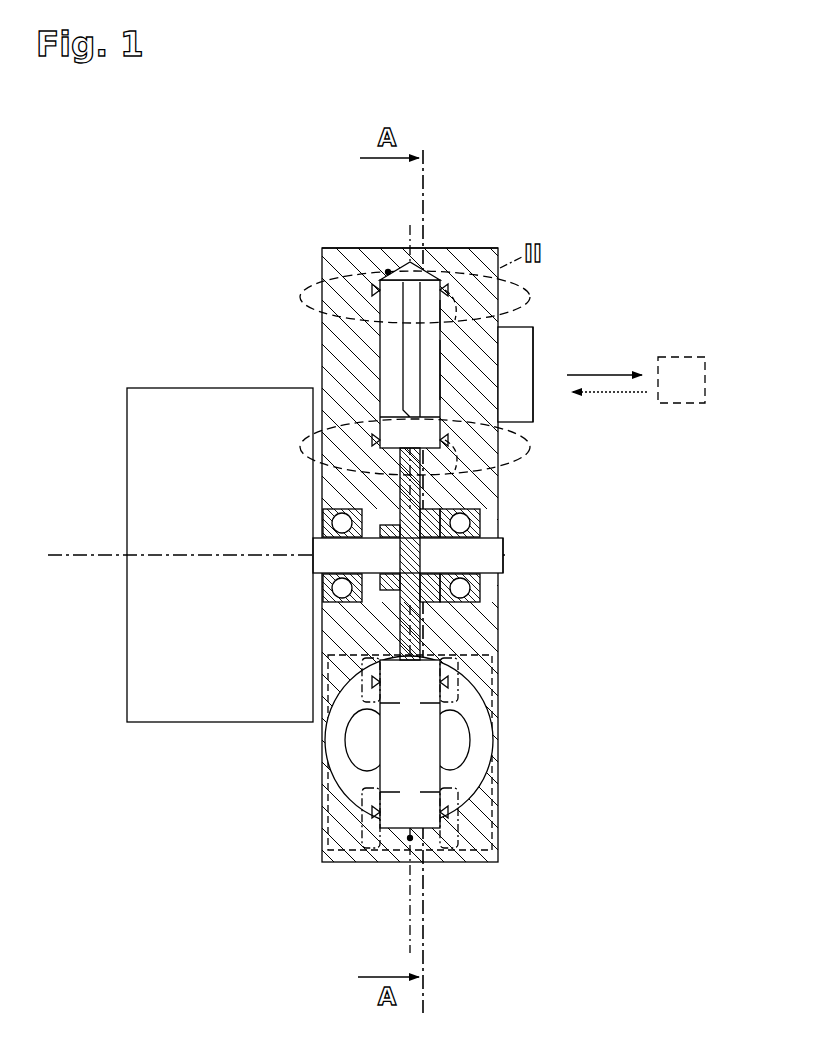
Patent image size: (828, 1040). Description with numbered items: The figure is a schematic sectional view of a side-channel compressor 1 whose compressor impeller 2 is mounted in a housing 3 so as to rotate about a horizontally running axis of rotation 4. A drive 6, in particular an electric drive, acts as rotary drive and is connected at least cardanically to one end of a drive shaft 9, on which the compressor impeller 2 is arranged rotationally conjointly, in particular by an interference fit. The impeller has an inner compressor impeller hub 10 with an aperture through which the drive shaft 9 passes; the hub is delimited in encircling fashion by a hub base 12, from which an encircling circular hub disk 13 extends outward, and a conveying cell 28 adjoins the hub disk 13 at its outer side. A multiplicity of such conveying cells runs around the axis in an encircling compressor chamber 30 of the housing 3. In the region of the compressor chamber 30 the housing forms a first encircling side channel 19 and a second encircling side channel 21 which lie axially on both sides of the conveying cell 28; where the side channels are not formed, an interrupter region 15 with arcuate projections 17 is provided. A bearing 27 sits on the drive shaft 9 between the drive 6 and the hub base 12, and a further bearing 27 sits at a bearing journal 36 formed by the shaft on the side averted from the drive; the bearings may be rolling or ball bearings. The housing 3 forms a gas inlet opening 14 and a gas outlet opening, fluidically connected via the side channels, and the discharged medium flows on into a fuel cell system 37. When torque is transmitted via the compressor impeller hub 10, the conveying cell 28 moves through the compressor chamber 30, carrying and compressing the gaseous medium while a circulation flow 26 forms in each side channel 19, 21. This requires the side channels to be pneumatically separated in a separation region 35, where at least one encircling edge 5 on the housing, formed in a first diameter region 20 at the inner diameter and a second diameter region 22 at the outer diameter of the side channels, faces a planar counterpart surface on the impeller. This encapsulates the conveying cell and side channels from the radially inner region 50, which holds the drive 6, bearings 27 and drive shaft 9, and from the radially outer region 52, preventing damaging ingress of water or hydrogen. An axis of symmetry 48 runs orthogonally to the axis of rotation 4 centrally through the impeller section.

The side-channel compressor 1 is at (207, 250).
The compressor impeller 2 is at (410, 258).
The housing 3 is at (470, 633).
The axis of rotation 4 is at (82, 553).
The encircling edge 5 is at (375, 296).
The drive 6 is at (140, 410).
The drive shaft 9 is at (480, 565).
The compressor impeller hub 10 is at (392, 590).
The hub base 12 is at (388, 577).
The hub disk 13 is at (425, 498).
The gas inlet opening 14 is at (513, 408).
The interrupter region 15 is at (441, 370).
The arcuate projections 17 is at (441, 347).
The first encircling side channel 19 is at (452, 742).
The first diameter region 20 is at (470, 457).
The second encircling side channel 21 is at (383, 778).
The second diameter region 22 is at (472, 305).
The circulation flow 26 is at (468, 757).
The bearing 27 is at (335, 523).
The conveying cell 28 is at (372, 355).
The compressor chamber 30 is at (472, 690).
The separation region 35 is at (357, 678).
The bearing journal 36 is at (517, 545).
The fuel cell system 37 is at (688, 357).
The axis of symmetry 48 is at (410, 925).
The region situated radially at the inside 50 is at (396, 493).
The region situated radially at the outside 52 is at (386, 271).